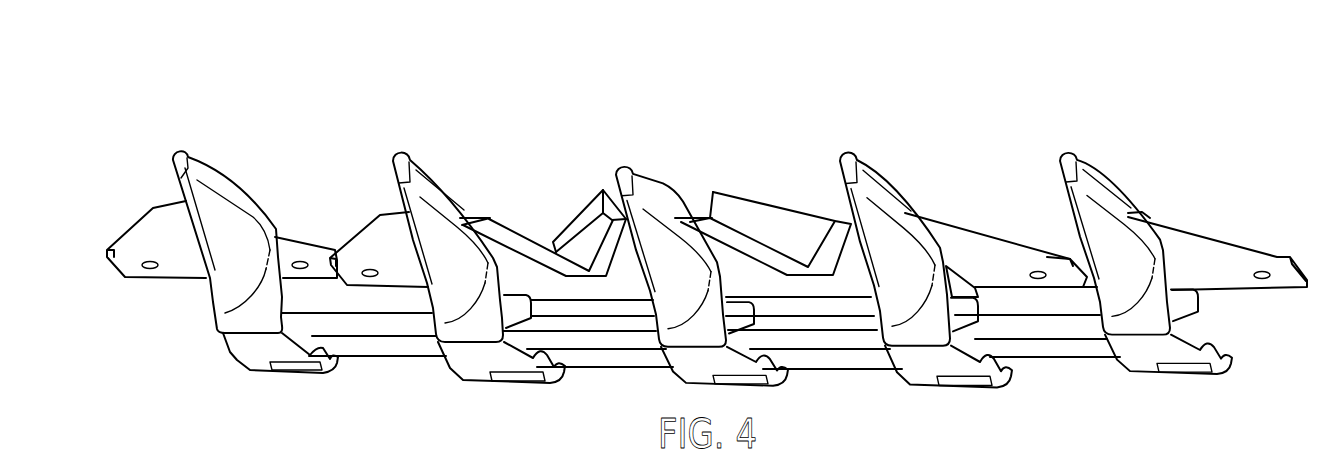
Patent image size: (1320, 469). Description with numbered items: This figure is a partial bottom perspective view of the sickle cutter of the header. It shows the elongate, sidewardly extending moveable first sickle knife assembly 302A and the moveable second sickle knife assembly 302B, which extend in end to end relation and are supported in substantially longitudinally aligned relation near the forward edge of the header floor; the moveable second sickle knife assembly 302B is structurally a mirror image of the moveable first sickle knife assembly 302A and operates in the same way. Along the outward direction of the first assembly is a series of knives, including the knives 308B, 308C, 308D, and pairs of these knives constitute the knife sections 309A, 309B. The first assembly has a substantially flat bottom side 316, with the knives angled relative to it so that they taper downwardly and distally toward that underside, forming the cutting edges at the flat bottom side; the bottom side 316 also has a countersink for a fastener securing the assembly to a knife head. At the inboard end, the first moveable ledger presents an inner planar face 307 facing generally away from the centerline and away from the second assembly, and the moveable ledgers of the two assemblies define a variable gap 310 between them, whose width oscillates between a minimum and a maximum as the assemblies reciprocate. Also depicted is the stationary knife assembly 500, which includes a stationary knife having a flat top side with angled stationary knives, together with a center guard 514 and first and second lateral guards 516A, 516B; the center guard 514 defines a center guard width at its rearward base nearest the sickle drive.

The moveable first sickle knife assembly 302A is at (297, 88).
The moveable second sickle knife assembly 302B is at (994, 118).
The knife section 309A is at (532, 140).
The knife section 309B is at (315, 140).
The bottom side 316 is at (153, 232).
The first lateral guard 516A is at (445, 181).
The second lateral guard 516B is at (887, 178).
The center guard 514 is at (635, 186).
The stationary knife assembly 500 is at (693, 200).
The inner planar face 307 is at (587, 220).
The variable gap 310 is at (712, 192).
The knife 308B is at (965, 236).
The knife 308C is at (1078, 259).
The knife 308D is at (1217, 241).